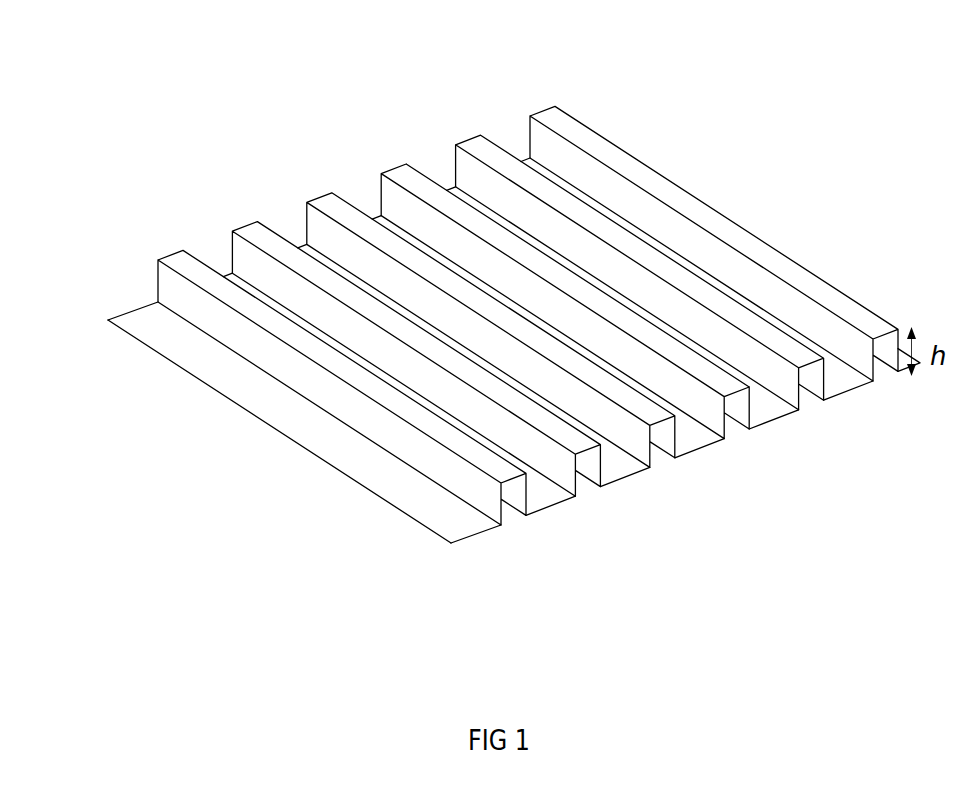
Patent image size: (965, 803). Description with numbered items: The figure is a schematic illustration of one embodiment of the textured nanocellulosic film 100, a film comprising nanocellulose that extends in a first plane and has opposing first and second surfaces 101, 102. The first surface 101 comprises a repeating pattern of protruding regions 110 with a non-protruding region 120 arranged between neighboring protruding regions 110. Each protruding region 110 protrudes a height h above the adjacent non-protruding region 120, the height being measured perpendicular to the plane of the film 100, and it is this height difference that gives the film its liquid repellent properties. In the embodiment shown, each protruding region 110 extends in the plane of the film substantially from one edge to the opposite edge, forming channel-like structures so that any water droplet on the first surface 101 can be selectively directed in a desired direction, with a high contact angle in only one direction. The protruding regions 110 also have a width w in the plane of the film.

The textured nanocellulosic film 100 is at (501, 277).
The first surface 101 is at (142, 305).
The second surface 102 is at (153, 352).
The protruding regions 110 is at (393, 170).
The non-protruding region 120 is at (713, 448).